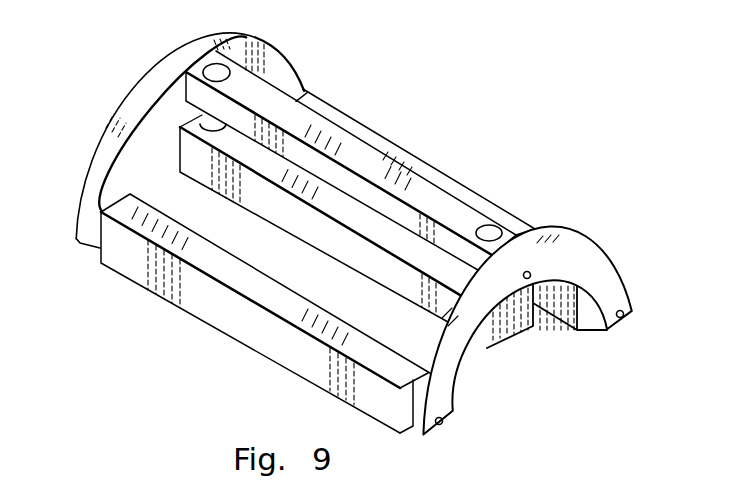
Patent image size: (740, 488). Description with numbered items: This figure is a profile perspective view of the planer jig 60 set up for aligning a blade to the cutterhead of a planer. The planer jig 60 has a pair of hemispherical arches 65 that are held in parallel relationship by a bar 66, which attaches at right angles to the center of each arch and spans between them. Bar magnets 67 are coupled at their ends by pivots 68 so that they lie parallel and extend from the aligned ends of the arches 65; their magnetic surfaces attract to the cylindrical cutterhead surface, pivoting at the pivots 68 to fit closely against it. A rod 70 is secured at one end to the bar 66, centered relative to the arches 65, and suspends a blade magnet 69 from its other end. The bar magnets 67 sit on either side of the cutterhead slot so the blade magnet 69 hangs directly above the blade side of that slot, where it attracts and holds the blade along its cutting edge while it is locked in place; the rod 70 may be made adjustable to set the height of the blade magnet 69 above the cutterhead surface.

The planer jig 60 is at (371, 240).
The hemispherical arches 65 is at (133, 104).
The bar 66 is at (403, 180).
The bar magnets 67 is at (147, 275).
The pivots 68 is at (443, 421).
The blade magnet 69 is at (357, 254).
The rod 70 is at (195, 116).